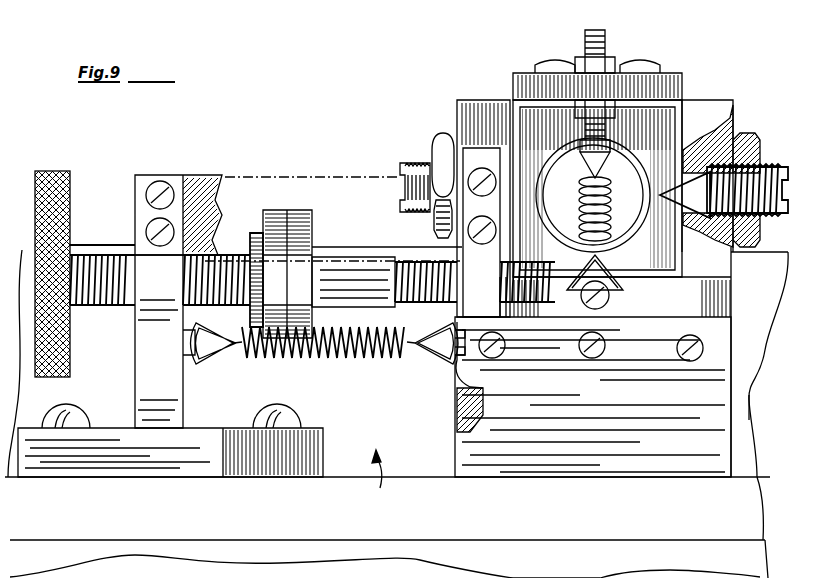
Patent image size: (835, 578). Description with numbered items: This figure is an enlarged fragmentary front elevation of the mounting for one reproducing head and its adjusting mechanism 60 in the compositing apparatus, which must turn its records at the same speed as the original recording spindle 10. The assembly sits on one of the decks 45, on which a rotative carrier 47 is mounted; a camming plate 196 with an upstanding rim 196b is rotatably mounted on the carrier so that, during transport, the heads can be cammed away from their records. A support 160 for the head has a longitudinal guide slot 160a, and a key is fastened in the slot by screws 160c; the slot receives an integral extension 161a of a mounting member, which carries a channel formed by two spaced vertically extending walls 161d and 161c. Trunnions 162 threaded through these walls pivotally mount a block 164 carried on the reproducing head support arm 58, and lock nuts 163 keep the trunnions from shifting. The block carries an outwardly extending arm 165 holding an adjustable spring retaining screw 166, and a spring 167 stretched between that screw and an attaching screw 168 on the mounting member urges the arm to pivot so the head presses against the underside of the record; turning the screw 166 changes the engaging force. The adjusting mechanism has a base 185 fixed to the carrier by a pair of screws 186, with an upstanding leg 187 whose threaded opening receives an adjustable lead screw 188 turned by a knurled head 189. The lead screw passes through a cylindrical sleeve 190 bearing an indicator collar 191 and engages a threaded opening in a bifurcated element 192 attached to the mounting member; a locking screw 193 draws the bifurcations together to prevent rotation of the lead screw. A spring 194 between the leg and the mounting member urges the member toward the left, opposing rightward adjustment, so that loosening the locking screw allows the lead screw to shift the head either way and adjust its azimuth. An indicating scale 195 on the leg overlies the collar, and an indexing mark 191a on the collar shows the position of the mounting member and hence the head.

The spindle 10 is at (440, 29).
The decks 45 is at (745, 555).
The rotative carrier 47 is at (741, 503).
The reproducing head support arm 58 is at (633, 177).
The adjusting mechanism 60 is at (361, 477).
The support 160 is at (572, 470).
The guide slot 160a is at (457, 390).
The screws 160c is at (585, 345).
The integral extension 161a is at (456, 366).
The vertically extending wall 161c is at (705, 110).
The vertically extending wall 161d is at (482, 100).
The trunnions 162 is at (408, 165).
The lock nuts 163 is at (438, 134).
The block 164 is at (657, 117).
The arm 165 is at (632, 88).
The adjustable spring retaining screw 166 is at (592, 34).
The spring 167 is at (597, 238).
The attaching screw 168 is at (590, 305).
The base 185 is at (205, 438).
The screws 186 is at (76, 415).
The upstanding leg 187 is at (152, 275).
The adjustable lead screw 188 is at (233, 252).
The knurled head 189 is at (56, 156).
The cylindrical sleeve 190 is at (343, 273).
The indicator collar 191 is at (302, 237).
The indexing mark 191a is at (289, 220).
The element 192 is at (485, 308).
The locking screw 193 is at (497, 238).
The spring 194 is at (374, 360).
The indicating scale 195 is at (203, 188).
The camming plate 196 is at (770, 432).
The upstanding rim 196b is at (748, 372).